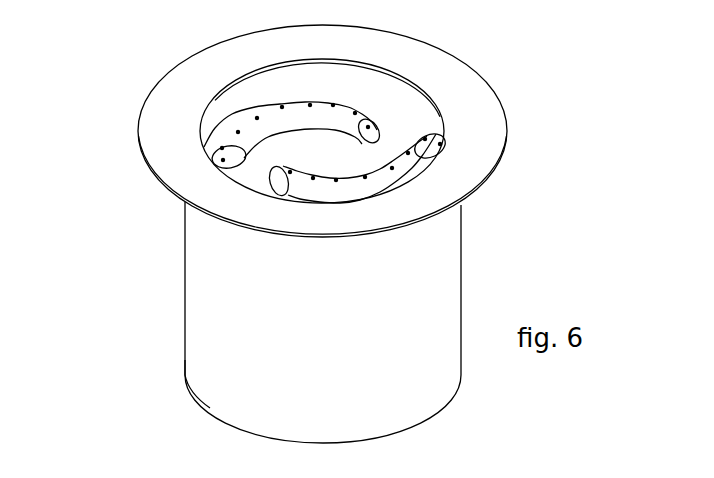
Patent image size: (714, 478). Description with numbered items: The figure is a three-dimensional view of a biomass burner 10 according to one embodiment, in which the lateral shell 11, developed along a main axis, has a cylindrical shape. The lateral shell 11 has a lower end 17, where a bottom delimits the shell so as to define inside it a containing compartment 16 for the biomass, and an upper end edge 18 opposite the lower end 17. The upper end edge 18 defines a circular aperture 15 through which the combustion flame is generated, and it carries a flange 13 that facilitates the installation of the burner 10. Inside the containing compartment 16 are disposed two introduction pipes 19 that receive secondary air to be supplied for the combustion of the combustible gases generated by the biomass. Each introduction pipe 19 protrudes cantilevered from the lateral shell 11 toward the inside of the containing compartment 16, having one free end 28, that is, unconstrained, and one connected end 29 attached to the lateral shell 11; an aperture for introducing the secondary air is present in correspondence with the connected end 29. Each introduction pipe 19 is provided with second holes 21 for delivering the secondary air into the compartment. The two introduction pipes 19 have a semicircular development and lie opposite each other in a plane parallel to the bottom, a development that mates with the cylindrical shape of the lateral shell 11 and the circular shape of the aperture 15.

The burner 10 is at (85, 106).
The lateral shell 11 is at (198, 298).
The flange 13 is at (490, 118).
The aperture 15 is at (428, 92).
The containing compartment 16 is at (233, 96).
The lower end 17 is at (183, 374).
The upper end edge 18 is at (472, 176).
The introduction pipe 19 is at (271, 116).
The second holes 21 is at (368, 127).
The free end 28 is at (427, 95).
The connected end 29 is at (441, 144).